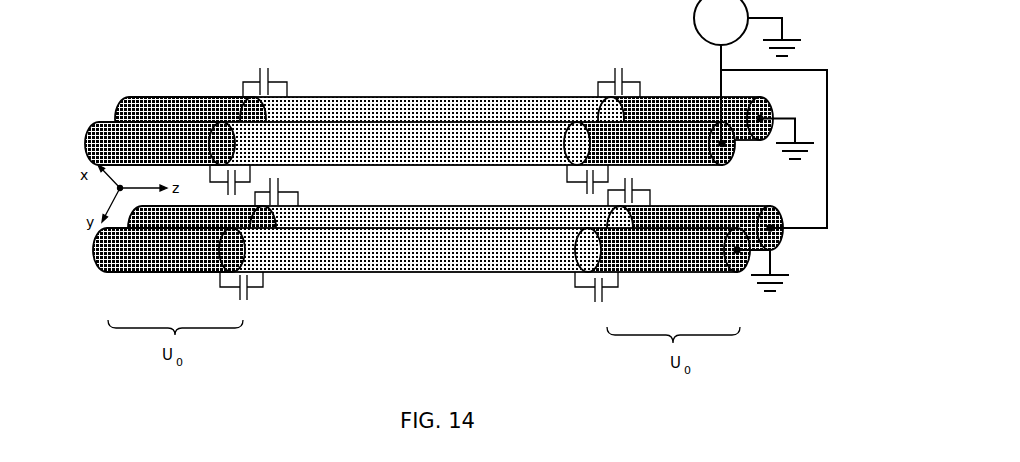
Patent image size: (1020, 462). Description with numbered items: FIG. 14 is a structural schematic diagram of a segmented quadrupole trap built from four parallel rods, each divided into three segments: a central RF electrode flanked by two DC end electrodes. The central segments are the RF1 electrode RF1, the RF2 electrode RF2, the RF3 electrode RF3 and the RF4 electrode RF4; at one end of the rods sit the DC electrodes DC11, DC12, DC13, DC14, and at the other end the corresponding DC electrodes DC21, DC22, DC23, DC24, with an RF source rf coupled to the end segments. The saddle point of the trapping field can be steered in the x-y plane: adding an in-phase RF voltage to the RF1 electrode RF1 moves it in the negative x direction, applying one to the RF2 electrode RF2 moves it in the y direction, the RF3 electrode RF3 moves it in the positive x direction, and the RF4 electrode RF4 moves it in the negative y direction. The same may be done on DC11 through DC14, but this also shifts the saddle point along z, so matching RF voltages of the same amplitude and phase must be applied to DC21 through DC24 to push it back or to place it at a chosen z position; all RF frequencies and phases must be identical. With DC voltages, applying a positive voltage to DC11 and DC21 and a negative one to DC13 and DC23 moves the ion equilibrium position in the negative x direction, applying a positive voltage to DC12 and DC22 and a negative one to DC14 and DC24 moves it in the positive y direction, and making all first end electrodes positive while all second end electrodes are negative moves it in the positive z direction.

The DC11 electrode DC11 is at (127, 143).
The DC12 electrode DC12 is at (174, 104).
The DC13 electrode DC13 is at (195, 227).
The DC14 electrode DC14 is at (162, 250).
The RF1 electrode RF1 is at (393, 143).
The RF2 electrode RF2 is at (425, 108).
The RF3 electrode RF3 is at (435, 228).
The RF4 electrode RF4 is at (403, 250).
The DC21 electrode DC21 is at (649, 143).
The DC22 electrode DC22 is at (685, 110).
The DC23 electrode DC23 is at (695, 219).
The DC24 electrode DC24 is at (662, 250).
The RF voltage source rf is at (760, 114).